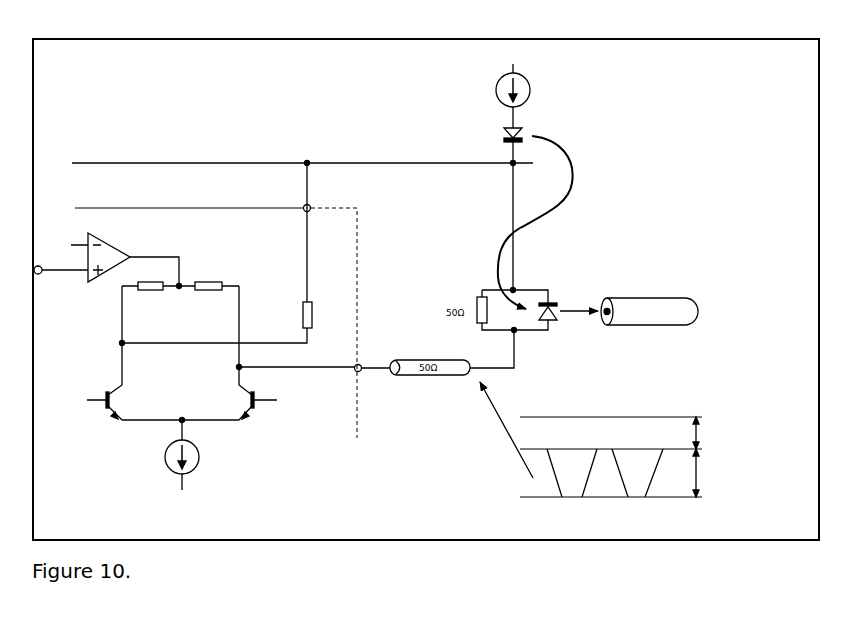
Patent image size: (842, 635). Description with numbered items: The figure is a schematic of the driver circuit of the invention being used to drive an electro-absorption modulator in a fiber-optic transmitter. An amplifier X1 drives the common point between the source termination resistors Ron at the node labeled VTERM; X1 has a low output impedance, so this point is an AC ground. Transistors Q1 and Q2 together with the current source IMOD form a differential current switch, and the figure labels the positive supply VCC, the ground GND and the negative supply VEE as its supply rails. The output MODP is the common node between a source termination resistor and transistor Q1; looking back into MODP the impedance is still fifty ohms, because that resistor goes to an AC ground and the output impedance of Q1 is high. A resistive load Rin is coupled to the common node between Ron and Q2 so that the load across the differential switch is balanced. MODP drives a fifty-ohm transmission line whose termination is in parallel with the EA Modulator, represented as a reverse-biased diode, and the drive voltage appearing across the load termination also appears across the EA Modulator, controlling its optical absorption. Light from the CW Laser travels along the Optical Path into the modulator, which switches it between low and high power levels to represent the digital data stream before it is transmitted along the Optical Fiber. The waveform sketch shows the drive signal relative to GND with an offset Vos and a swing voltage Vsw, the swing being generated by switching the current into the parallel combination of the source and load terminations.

The amplifier X1 is at (82, 256).
The termination voltage node VTERM is at (154, 265).
The source termination resistor Ron is at (180, 287).
The resistive load Rin is at (228, 254).
The transistor Q1 is at (258, 402).
The transistor Q2 is at (104, 402).
The current source IMOD is at (164, 454).
The negative supply VEE is at (180, 498).
The positive supply current source VCC is at (513, 80).
The ground GND is at (302, 158).
The MODP output MODP is at (315, 359).
The CW laser CW Laser is at (499, 135).
The EA modulator EA Modulator is at (553, 328).
The optical output Optical Path is at (545, 221).
The optical fiber Optical Fiber is at (649, 305).
The offset voltage Vos is at (620, 427).
The swing voltage Vsw is at (621, 473).